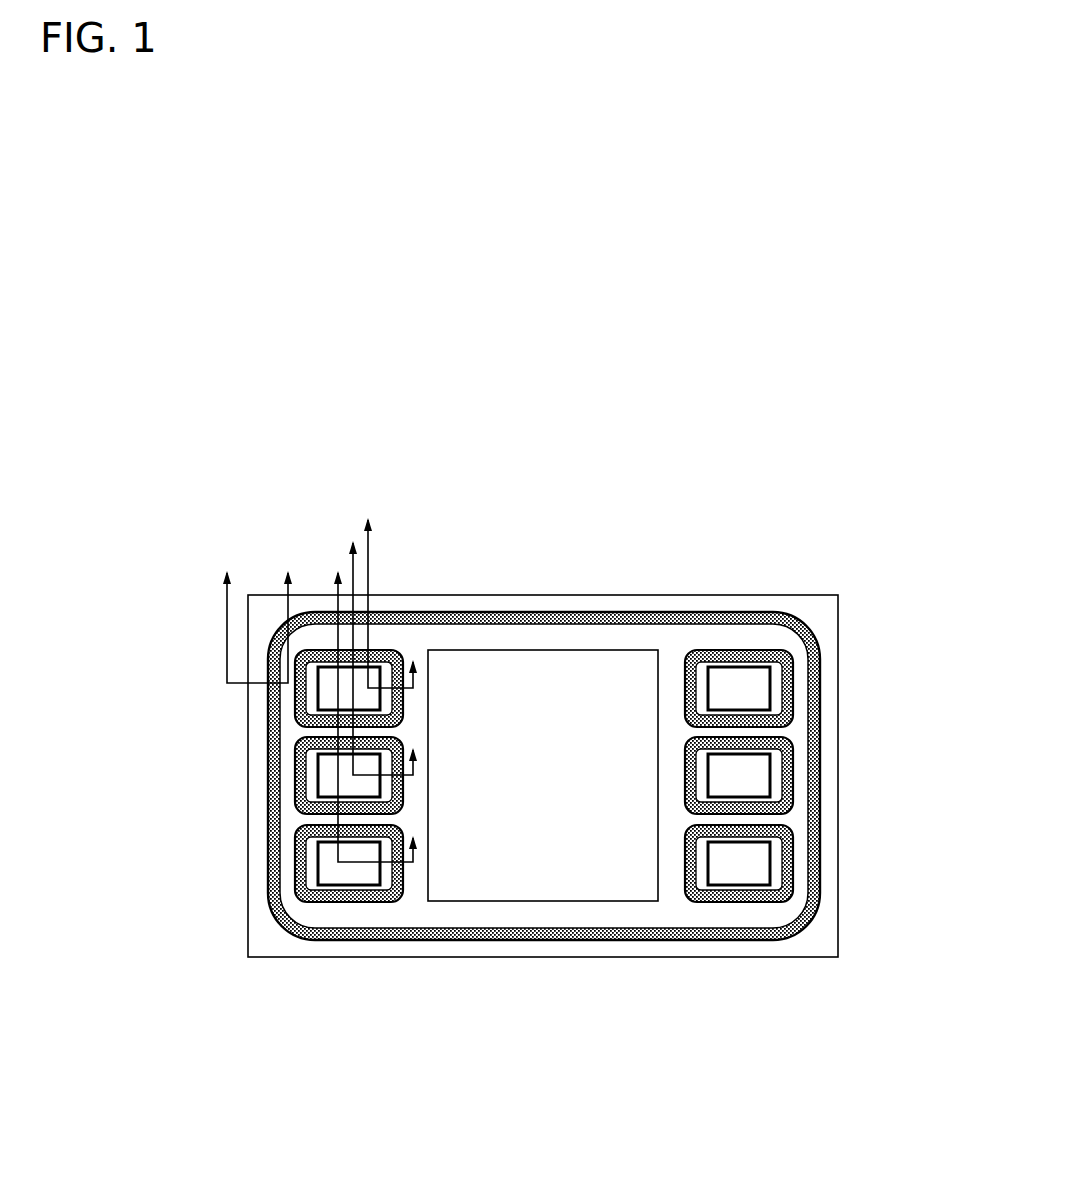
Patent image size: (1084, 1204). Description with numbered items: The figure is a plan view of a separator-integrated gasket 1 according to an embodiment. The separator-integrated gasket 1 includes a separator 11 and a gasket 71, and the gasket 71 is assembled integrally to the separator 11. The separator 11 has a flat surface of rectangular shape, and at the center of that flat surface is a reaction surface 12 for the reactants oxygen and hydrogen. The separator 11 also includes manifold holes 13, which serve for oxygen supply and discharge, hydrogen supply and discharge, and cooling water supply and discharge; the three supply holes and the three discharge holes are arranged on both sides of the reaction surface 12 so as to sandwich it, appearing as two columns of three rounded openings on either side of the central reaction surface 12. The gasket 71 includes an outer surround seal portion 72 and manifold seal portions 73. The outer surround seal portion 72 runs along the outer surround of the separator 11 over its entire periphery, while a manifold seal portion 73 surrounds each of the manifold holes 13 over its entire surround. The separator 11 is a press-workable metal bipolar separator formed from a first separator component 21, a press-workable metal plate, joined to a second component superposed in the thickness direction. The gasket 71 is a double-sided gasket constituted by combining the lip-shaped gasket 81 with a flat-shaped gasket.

The separator-integrated gasket 1 is at (680, 564).
The separator 11 is at (772, 603).
The reaction surface 12 is at (554, 780).
The manifold holes 13 is at (282, 645).
The first separator component 21 is at (543, 770).
The gasket 71 is at (518, 613).
The outer surround seal portion 72 is at (568, 613).
The manifold seal portions 73 is at (297, 707).
The lip-shaped gasket 81 is at (545, 940).